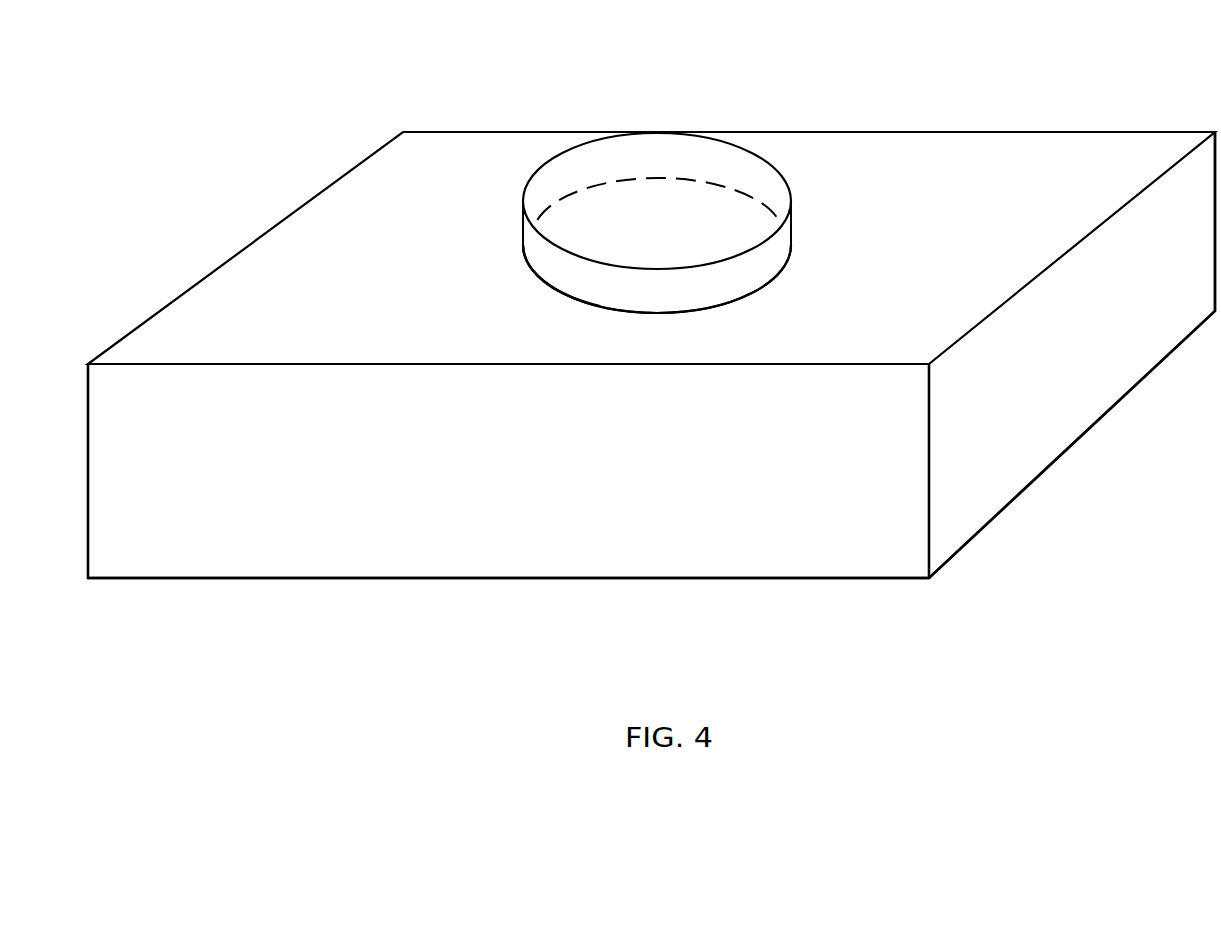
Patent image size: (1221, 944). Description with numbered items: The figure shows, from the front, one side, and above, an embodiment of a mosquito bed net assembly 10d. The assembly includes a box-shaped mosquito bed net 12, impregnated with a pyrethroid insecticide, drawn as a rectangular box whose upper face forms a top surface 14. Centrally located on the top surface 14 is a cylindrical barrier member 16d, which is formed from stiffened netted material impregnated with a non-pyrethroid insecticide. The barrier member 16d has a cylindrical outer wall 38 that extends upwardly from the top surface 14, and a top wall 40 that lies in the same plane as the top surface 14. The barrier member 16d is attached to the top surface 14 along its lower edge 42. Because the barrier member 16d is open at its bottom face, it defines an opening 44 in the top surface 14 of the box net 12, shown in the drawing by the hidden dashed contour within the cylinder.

The mosquito bed net assembly 10d is at (316, 126).
The mosquito bed box net 12 is at (680, 535).
The top surface 14 is at (1092, 160).
The cylindrical barrier member 16d is at (525, 226).
The cylindrical outer wall 38 is at (693, 288).
The top wall 40 is at (672, 155).
The lower edge 42 is at (578, 303).
The opening 44 is at (740, 220).